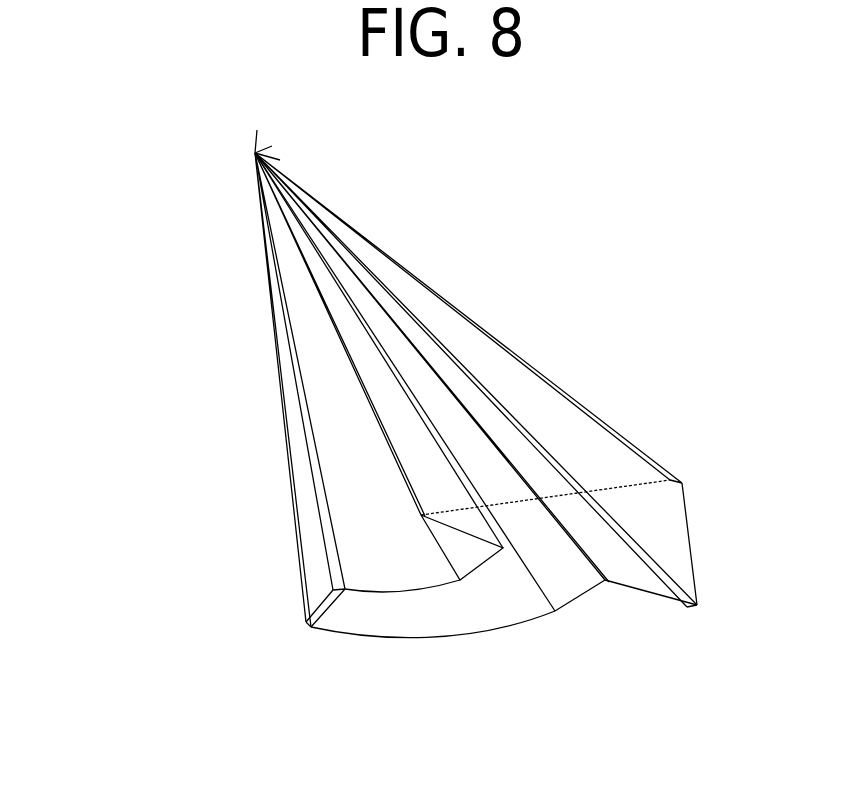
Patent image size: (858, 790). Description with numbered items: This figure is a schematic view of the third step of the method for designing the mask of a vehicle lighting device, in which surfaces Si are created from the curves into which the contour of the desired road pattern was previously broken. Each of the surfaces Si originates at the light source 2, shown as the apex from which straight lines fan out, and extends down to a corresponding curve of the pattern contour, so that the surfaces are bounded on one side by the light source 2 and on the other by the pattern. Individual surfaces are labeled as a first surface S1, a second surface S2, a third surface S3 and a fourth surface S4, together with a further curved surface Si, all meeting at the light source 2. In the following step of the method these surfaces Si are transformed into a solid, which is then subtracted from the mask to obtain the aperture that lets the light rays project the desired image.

The light source 2 is at (246, 150).
The first surface S1 is at (658, 517).
The second surface S2 is at (660, 468).
The third surface S3 is at (592, 438).
The fourth surface S4 is at (378, 380).
The surfaces Si is at (378, 572).